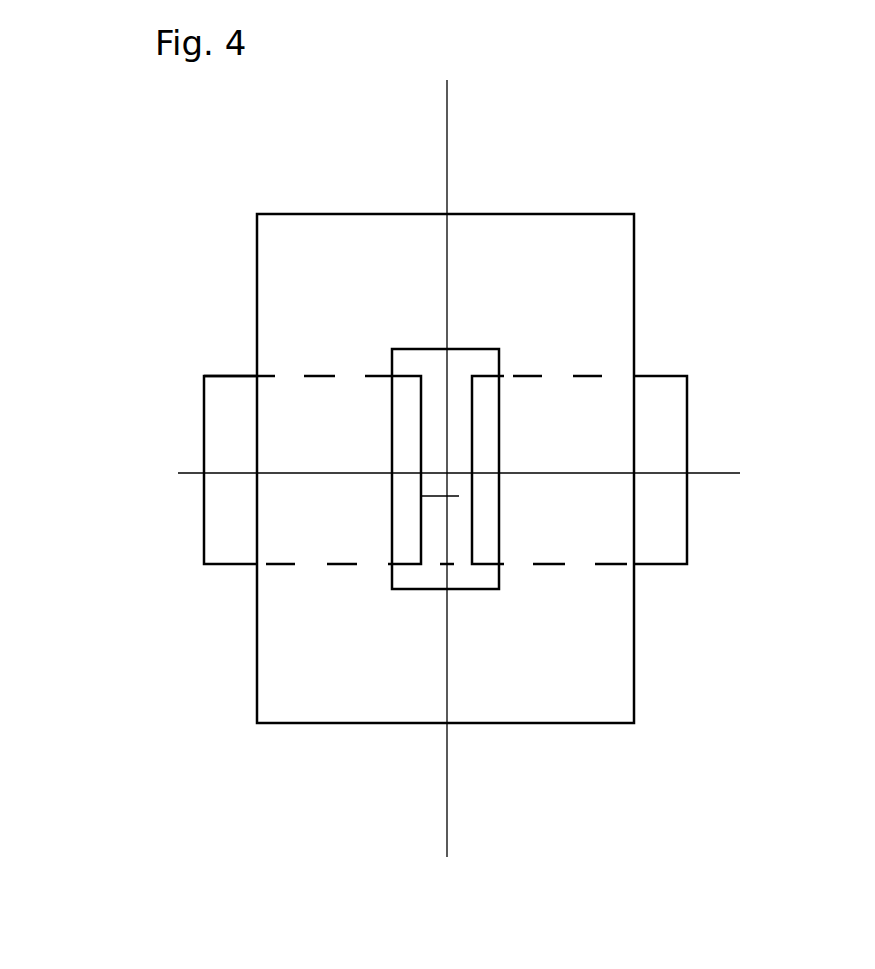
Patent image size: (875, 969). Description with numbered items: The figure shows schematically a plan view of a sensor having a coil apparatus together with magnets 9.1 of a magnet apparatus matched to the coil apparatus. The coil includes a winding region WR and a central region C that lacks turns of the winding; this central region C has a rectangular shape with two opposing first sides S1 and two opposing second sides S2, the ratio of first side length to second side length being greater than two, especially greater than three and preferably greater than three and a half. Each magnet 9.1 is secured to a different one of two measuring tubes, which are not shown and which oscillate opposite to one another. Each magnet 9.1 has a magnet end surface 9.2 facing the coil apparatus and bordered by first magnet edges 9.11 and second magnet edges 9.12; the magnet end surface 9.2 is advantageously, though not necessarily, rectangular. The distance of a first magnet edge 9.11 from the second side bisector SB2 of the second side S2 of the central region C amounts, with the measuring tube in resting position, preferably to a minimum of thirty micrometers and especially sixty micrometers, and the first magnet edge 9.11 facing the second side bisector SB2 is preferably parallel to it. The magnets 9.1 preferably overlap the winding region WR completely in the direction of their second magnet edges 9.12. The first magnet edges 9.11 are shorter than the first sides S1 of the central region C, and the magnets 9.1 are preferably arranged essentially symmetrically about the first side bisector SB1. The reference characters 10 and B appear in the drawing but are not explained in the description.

The base body 10 is at (607, 777).
The magnet 9.1 is at (636, 540).
The first magnet edge 9.11 is at (420, 387).
The second magnet edge 9.12 is at (284, 373).
The magnet end surface 9.2 is at (407, 550).
The first side S1 is at (502, 577).
The second side S2 is at (419, 347).
The width B is at (459, 496).
The central region C is at (446, 563).
The first side bisector SB1 is at (418, 466).
The second side bisector SB2 is at (455, 439).
The winding region WR is at (607, 268).